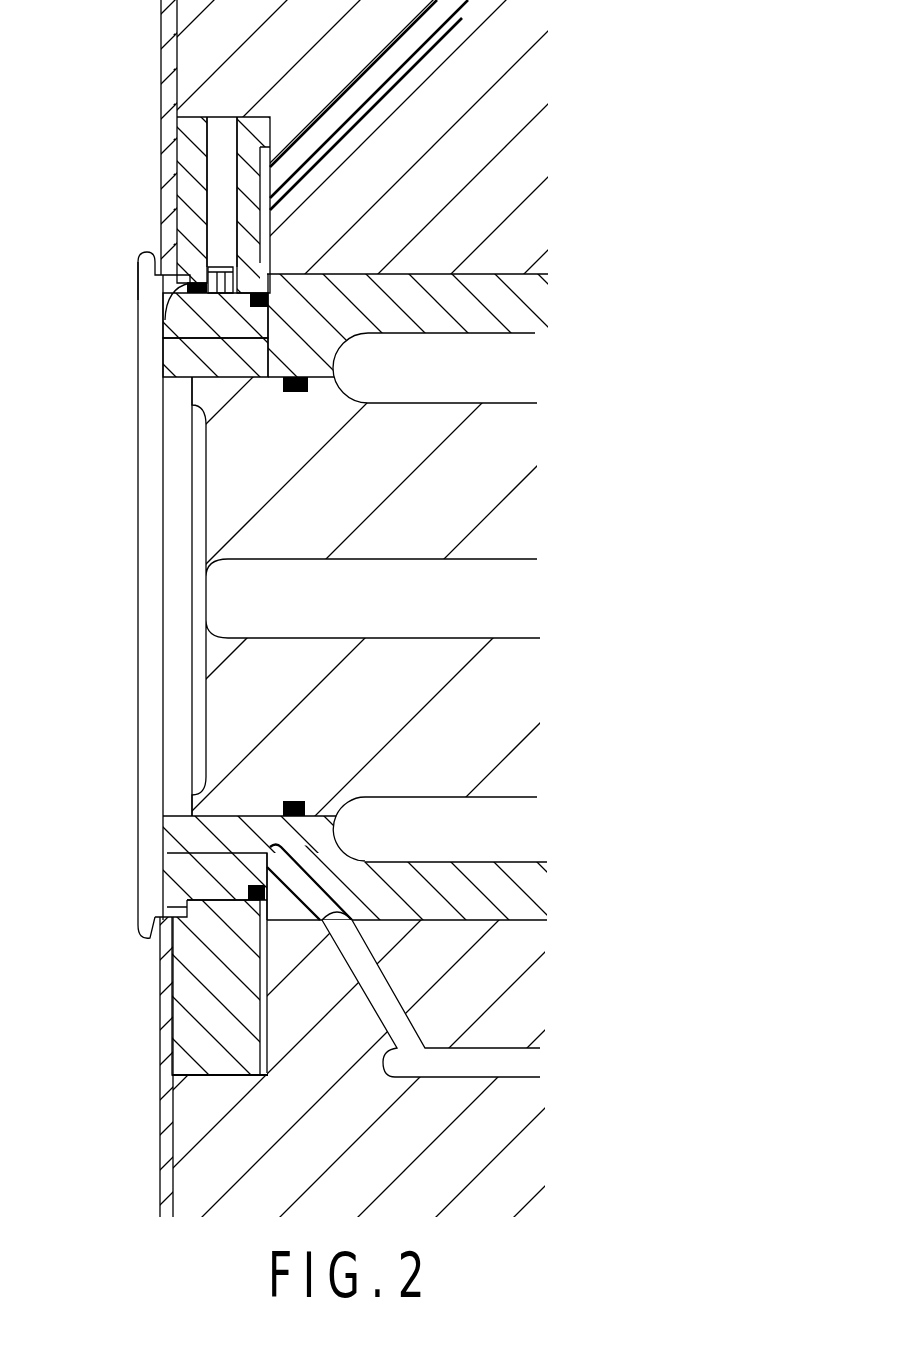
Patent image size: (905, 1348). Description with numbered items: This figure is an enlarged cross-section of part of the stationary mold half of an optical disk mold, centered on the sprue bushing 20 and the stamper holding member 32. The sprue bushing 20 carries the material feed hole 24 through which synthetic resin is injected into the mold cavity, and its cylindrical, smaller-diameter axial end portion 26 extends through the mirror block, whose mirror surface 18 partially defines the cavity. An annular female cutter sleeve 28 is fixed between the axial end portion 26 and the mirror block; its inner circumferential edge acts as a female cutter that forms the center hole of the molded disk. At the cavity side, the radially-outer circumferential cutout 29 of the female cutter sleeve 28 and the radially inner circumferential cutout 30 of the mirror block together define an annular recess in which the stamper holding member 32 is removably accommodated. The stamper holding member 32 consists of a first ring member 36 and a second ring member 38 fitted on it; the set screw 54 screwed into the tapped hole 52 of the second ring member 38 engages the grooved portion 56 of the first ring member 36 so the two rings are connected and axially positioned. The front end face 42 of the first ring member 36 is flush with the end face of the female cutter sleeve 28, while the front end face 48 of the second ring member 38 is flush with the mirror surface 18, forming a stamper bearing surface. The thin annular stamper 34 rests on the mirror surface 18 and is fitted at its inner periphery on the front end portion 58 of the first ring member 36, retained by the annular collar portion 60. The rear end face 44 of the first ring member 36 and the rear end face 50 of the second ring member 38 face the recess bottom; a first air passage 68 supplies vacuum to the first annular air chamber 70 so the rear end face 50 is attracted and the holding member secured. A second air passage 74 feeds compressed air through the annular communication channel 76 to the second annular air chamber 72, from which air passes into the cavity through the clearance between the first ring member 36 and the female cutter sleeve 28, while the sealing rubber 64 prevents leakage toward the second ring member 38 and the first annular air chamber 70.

The mirror surface 18 is at (175, 50).
The sprue bushing 20 is at (512, 393).
The material feed hole 24 is at (497, 567).
The axial end portion 26 is at (232, 474).
The female cutter sleeve 28 is at (468, 908).
The radially-outer circumferential cutout 29 is at (182, 347).
The radially inner circumferential cutout 30 is at (175, 1057).
The stamper holding member 32 is at (120, 928).
The annular stamper 34 is at (167, 1147).
The first ring member 36 is at (190, 325).
The second ring member 38 is at (200, 993).
The front end face 42 is at (163, 870).
The rear end face 44 is at (272, 318).
The front end face 48 is at (175, 148).
The rear end face 50 is at (267, 1053).
The tapped hole 52 is at (218, 190).
The set screw 54 is at (227, 263).
The grooved portion 56 is at (190, 277).
The front end portion 58 is at (163, 905).
The annular collar portion 60 is at (155, 937).
The sealing rubber 64 is at (265, 302).
The first air passage 68 is at (398, 57).
The first annular air chamber 70 is at (280, 200).
The second annular air chamber 72 is at (235, 385).
The second air passage 74 is at (456, 1077).
The annular communication channel 76 is at (340, 273).